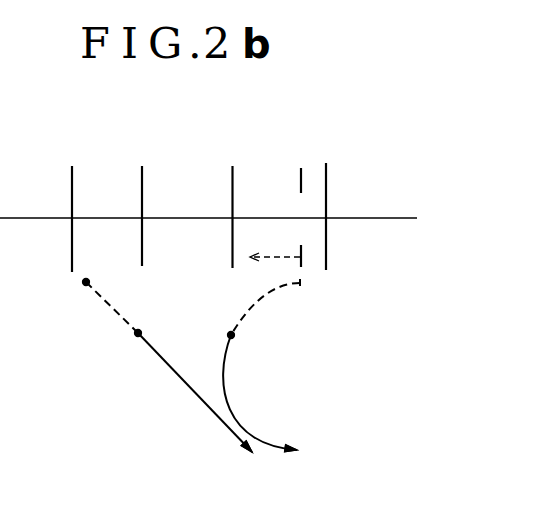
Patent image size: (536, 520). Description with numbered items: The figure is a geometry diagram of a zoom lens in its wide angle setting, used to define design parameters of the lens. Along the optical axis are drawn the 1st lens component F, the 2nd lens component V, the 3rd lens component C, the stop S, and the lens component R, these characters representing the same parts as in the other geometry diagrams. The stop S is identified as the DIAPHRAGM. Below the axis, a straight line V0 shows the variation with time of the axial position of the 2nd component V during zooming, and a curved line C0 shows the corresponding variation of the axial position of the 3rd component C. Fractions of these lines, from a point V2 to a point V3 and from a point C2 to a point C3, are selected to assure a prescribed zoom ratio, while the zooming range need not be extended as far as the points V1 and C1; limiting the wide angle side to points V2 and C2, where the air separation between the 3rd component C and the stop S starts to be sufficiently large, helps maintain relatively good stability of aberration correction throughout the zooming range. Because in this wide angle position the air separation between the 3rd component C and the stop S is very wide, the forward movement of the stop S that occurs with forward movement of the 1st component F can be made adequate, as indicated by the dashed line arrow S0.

The 1st lens component F is at (72, 166).
The 2nd lens component V is at (142, 166).
The 3rd lens component C is at (232, 166).
The stop S is at (301, 168).
The lens component R is at (326, 163).
The diaphragm DIAPHRAGM is at (303, 263).
The dashed line arrow So S0 is at (280, 257).
The straight line Vo V0 is at (176, 374).
The point V1 is at (86, 283).
The point V2 is at (137, 334).
The point V3 is at (246, 454).
The curved line Co C0 is at (226, 399).
The point C1 is at (300, 284).
The point C2 is at (233, 337).
The point C3 is at (293, 454).